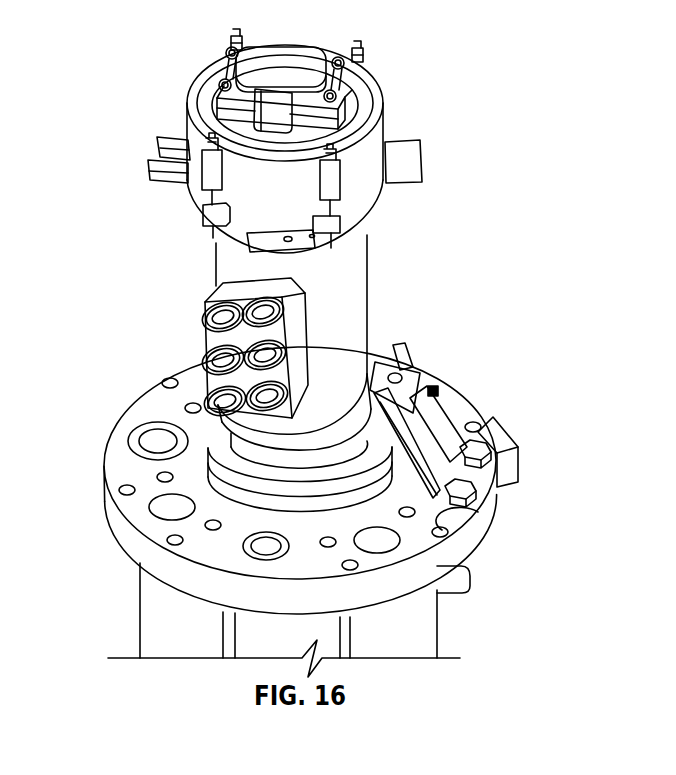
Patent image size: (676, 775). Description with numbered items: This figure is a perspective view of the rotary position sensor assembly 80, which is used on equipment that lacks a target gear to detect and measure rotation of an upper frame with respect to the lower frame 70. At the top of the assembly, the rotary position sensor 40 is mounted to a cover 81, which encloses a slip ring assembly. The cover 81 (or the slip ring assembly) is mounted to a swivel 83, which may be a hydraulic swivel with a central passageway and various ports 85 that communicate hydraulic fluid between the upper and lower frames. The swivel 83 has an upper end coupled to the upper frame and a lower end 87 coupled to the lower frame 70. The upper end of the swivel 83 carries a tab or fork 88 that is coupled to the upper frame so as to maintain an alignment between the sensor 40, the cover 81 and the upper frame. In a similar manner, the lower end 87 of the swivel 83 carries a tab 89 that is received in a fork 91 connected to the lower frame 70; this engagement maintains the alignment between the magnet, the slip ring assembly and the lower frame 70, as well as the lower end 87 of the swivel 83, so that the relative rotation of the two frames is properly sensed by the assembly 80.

The rotary position sensor 40 is at (299, 62).
The lower frame 70 is at (462, 520).
The rotary position sensor assembly 80 is at (186, 241).
The cover 81 is at (380, 97).
The swivel 83 is at (368, 296).
The ports 85 is at (420, 160).
The lower end 87 is at (368, 330).
The tab or fork 88 is at (158, 140).
The tab 89 is at (418, 374).
The fork 91 is at (447, 462).